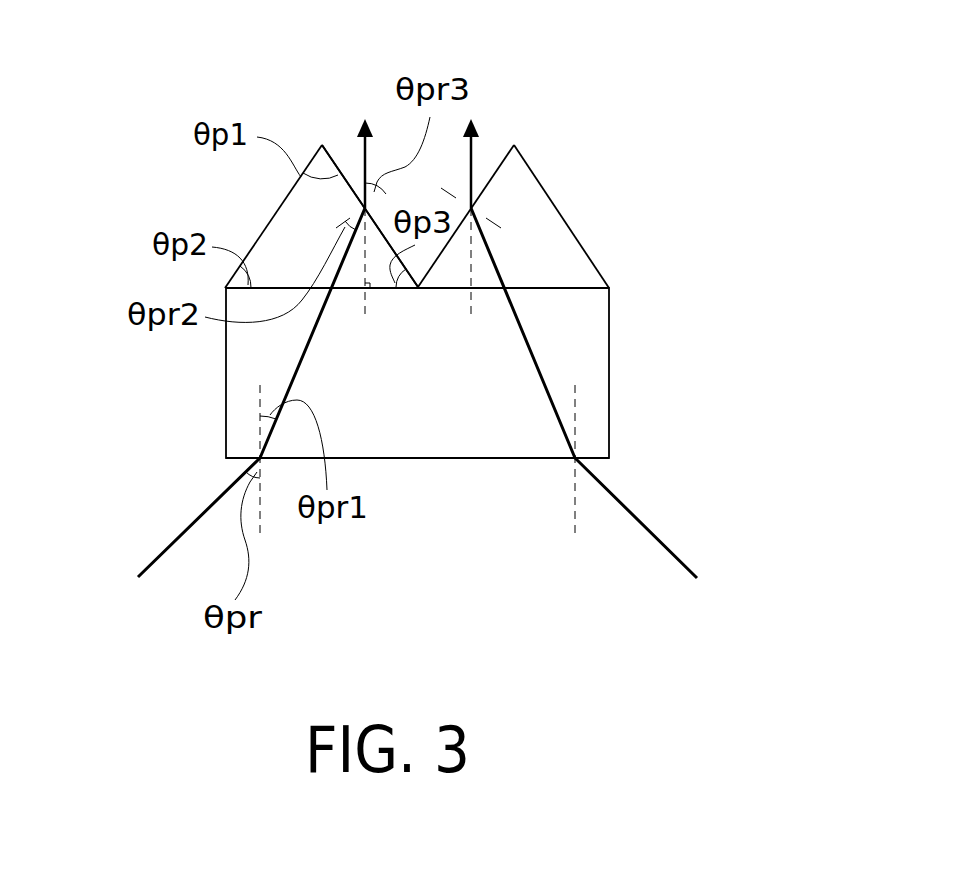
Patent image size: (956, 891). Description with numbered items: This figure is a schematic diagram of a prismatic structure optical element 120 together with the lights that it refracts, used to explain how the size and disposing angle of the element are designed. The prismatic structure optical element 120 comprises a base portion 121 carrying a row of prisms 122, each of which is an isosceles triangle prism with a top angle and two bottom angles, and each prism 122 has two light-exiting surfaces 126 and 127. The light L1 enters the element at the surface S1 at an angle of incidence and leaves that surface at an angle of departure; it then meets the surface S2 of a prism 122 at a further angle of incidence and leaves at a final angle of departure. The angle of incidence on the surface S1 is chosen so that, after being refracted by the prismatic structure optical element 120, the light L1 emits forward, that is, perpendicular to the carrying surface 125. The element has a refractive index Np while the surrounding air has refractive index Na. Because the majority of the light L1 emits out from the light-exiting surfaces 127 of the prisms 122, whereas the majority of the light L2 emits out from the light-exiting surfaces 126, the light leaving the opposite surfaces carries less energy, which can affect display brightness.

The prismatic structure optical element 120 is at (490, 289).
The base layer 121 is at (580, 321).
The prism 122 is at (455, 150).
The carrying surface 125 is at (470, 292).
The light-exiting surface 126 is at (266, 226).
The light-exiting surface 127 is at (346, 176).
The surface S1 is at (425, 461).
The surface S2 is at (330, 153).
The light L1 is at (170, 542).
The light L2 is at (665, 545).